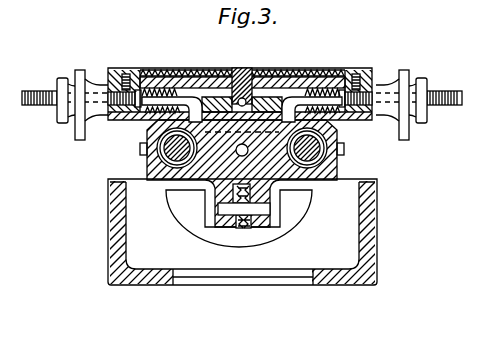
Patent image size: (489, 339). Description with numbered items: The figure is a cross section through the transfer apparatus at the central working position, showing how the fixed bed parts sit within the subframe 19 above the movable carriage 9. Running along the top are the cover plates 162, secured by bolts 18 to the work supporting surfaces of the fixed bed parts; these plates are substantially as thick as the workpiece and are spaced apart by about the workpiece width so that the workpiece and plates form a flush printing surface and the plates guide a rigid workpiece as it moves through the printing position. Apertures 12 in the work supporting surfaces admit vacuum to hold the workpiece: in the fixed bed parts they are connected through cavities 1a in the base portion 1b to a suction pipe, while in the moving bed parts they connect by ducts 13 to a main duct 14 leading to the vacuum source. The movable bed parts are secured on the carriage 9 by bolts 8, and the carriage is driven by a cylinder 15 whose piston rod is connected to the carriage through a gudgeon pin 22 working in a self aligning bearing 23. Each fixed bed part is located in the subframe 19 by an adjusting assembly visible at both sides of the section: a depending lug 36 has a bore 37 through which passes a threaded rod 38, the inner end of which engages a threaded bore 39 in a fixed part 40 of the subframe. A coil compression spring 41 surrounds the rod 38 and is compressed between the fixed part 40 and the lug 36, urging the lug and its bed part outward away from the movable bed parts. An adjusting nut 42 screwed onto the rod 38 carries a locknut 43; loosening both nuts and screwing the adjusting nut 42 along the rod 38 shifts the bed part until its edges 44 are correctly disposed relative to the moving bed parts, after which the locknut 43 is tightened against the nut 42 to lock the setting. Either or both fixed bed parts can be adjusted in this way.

The cavities 1a is at (153, 74).
The base portion 1b is at (144, 73).
The bolts 8 is at (197, 141).
The carriage 9 is at (320, 173).
The apertures 12 is at (183, 97).
The ducts 13 is at (250, 80).
The main duct 14 is at (242, 107).
The cylinder 15 is at (235, 233).
The bolts 18 is at (110, 76).
The subframe 19 is at (118, 258).
The gudgeon pin 22 is at (270, 208).
The self aligning bearing 23 is at (250, 225).
The depending lug 36 is at (122, 118).
The bore 37 is at (118, 120).
The threaded rod 38 is at (40, 92).
The threaded bore 39 is at (179, 94).
The fixed part 40 is at (206, 80).
The coil compression spring 41 is at (142, 118).
The adjusting nut 42 is at (77, 133).
The locknut 43 is at (60, 78).
The edges 44 is at (220, 100).
The cover plates 162 is at (130, 72).